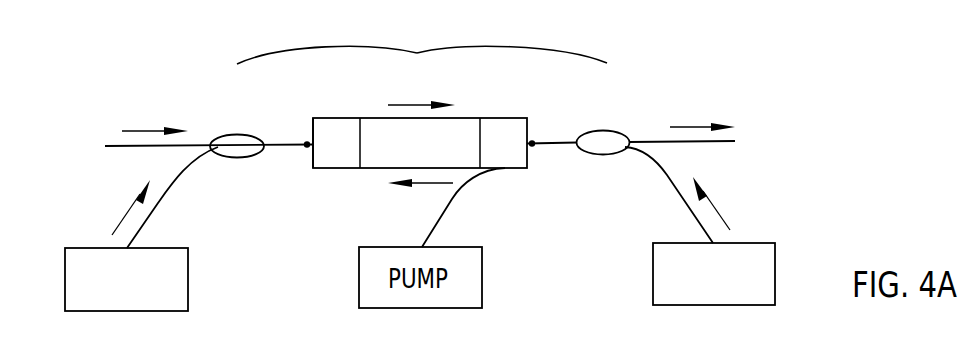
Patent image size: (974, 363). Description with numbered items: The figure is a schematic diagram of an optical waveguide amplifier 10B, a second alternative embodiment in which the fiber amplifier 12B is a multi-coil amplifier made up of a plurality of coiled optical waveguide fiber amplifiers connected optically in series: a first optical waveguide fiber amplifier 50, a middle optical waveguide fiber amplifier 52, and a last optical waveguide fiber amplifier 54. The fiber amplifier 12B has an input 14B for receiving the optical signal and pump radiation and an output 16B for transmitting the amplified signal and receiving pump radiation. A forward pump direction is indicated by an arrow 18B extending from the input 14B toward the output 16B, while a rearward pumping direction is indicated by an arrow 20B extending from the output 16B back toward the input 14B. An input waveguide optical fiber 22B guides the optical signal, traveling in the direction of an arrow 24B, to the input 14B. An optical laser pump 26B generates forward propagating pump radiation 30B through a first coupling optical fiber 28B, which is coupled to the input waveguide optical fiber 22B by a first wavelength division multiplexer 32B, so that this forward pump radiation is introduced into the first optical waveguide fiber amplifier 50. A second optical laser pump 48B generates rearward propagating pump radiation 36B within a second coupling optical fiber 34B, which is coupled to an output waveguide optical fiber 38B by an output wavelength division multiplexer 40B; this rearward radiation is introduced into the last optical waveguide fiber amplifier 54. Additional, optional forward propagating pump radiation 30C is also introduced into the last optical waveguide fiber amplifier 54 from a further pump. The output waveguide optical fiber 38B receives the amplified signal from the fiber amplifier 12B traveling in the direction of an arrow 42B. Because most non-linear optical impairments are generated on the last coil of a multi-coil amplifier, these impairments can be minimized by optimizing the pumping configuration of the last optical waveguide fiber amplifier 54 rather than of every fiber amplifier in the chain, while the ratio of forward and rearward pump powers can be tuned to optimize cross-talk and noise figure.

The optical waveguide amplifier 10B is at (422, 41).
The fiber amplifier 12B is at (472, 118).
The input 14B is at (307, 139).
The output 16B is at (533, 137).
The forward pump direction arrow 18B is at (407, 103).
The rearward pumping direction arrow 20B is at (425, 185).
The input waveguide optical fiber 22B is at (133, 147).
The optical signal direction arrow 24B is at (145, 128).
The optical laser pump 26B is at (170, 248).
The first coupling optical fiber 28B is at (190, 164).
The forward propagating pump radiation 30B is at (124, 212).
The additional forward propagating pump radiation 30C is at (450, 200).
The first wavelength division multiplexer 32B is at (265, 148).
The second coupling optical fiber 34B is at (653, 160).
The rearward propagating pump radiation 36B is at (715, 205).
The output waveguide optical fiber 38B is at (712, 143).
The output wavelength division multiplexer 40B is at (582, 150).
The amplified signal direction arrow 42B is at (688, 122).
The second optical laser pump 48B is at (673, 243).
The first optical waveguide fiber amplifier 50 is at (328, 168).
The middle optical waveguide fiber amplifier 52 is at (368, 168).
The last optical waveguide fiber amplifier 54 is at (513, 168).